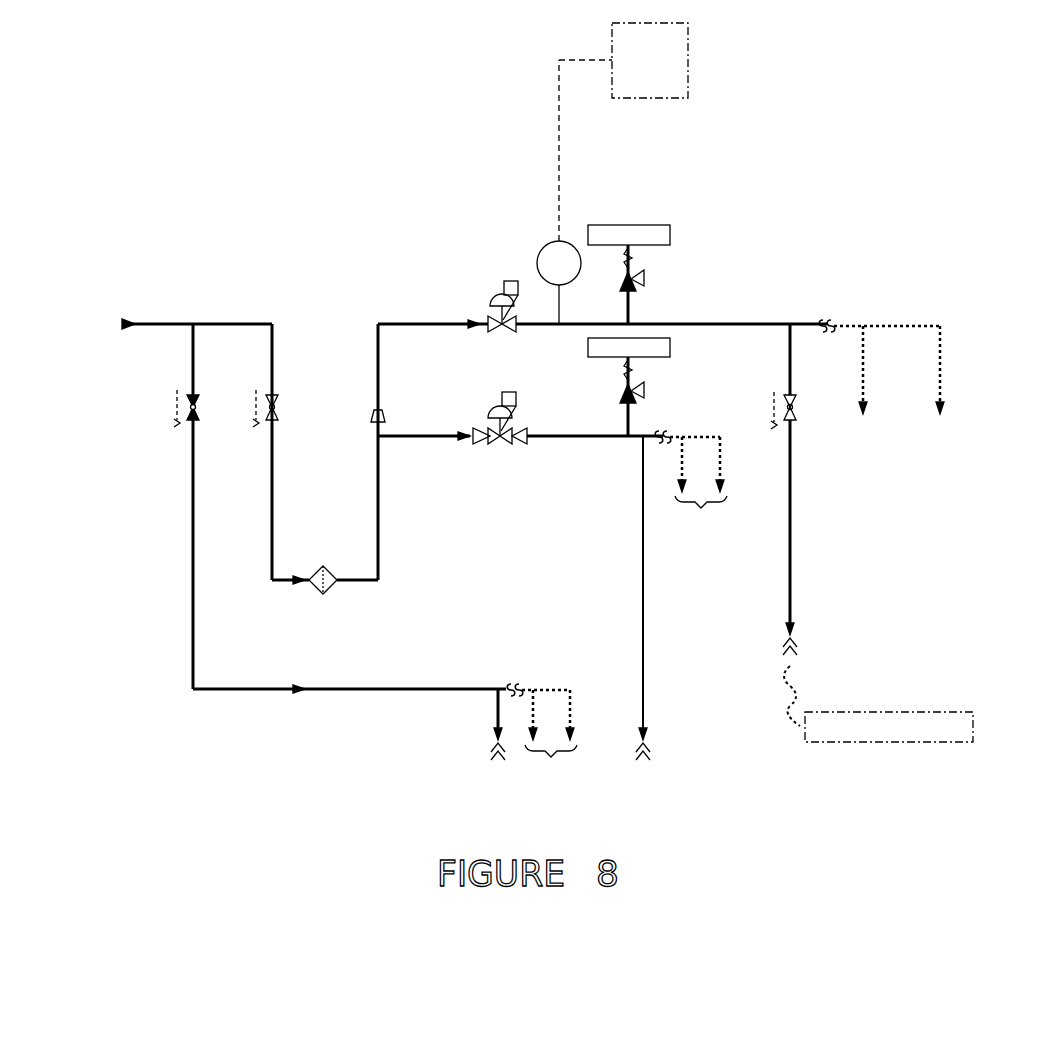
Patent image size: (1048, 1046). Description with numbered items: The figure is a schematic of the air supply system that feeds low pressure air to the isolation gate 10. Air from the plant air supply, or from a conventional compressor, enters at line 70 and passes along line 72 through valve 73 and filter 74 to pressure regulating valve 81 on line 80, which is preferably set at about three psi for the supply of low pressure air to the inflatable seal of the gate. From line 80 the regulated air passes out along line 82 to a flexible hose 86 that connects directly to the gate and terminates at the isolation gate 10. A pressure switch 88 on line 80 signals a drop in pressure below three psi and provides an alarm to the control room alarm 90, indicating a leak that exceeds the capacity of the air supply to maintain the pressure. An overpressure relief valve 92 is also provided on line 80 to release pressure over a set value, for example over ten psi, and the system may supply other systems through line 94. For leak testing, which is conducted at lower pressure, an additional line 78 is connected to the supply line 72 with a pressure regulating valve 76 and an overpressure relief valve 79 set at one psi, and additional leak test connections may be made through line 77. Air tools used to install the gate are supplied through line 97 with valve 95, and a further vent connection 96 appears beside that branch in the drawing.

The isolation gate 10 is at (950, 712).
The line 70 is at (130, 324).
The line 72 is at (274, 360).
The valve 73 is at (276, 419).
The filter 74 is at (322, 566).
The pressure regulating valve 76 is at (482, 444).
The line 77 is at (691, 436).
The line 78 is at (642, 598).
The overpressure relief valve 79 is at (644, 392).
The line 80 is at (388, 324).
The pressure regulating valve 81 is at (494, 298).
The line 82 is at (790, 535).
The flexible hose 86 is at (794, 670).
The pressure switch 88 is at (569, 240).
The control room alarm 90 is at (688, 96).
The overpressure relief valve 92 is at (642, 285).
The line 94 is at (854, 327).
The valve 95 is at (190, 420).
The vent 96 is at (495, 728).
The line 97 is at (190, 578).